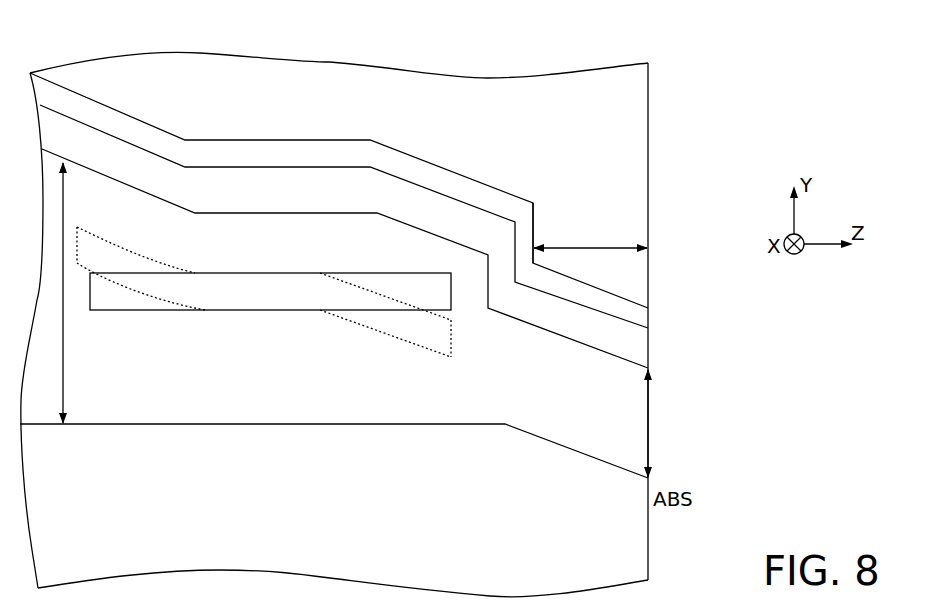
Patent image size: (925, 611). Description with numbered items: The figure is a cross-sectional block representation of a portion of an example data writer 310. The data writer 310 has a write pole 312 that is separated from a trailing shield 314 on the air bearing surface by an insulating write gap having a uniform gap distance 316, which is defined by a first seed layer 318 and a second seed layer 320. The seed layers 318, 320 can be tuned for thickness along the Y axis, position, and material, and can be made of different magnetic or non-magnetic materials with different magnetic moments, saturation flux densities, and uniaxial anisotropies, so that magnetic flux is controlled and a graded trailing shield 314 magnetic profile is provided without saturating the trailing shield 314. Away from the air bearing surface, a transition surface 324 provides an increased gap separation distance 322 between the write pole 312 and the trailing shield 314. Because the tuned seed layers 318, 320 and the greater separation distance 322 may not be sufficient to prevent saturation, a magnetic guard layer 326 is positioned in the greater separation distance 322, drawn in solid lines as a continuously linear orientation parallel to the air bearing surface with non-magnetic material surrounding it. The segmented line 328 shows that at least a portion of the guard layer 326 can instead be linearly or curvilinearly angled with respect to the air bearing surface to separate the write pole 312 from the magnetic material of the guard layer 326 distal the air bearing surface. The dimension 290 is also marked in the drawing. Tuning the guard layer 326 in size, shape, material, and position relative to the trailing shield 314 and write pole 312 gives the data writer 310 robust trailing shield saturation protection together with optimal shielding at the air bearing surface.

The data writer 310 is at (714, 53).
The write pole 312 is at (357, 512).
The trailing shield 314 is at (641, 102).
The uniform gap distance 316 is at (667, 423).
The first seed layer 318 is at (288, 168).
The second seed layer 320 is at (505, 245).
The increased gap separation distance 322 is at (84, 293).
The transition surface 324 is at (537, 221).
The magnetic guard layer 326 is at (445, 300).
The segmented line 328 is at (107, 247).
The width dimension 290 is at (590, 239).